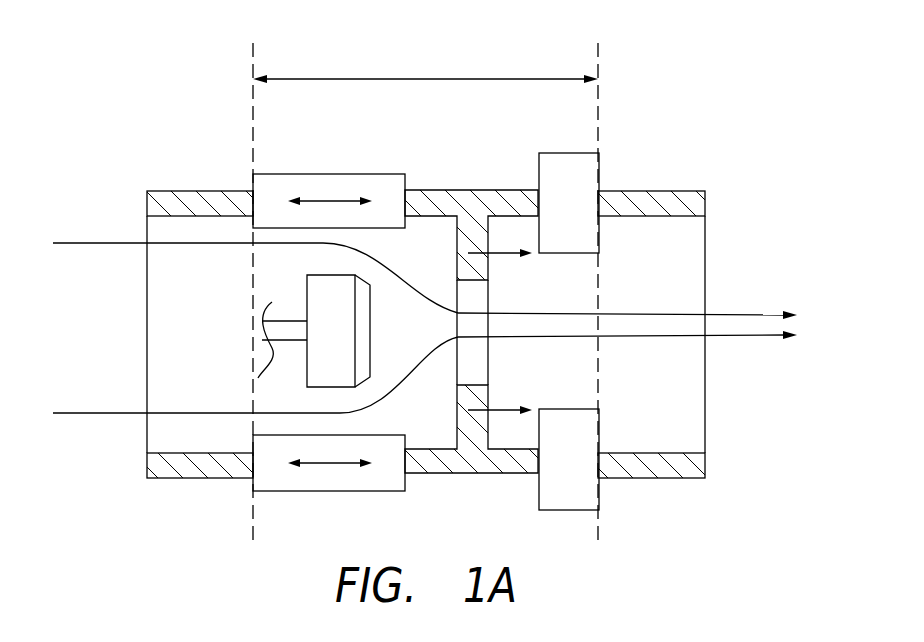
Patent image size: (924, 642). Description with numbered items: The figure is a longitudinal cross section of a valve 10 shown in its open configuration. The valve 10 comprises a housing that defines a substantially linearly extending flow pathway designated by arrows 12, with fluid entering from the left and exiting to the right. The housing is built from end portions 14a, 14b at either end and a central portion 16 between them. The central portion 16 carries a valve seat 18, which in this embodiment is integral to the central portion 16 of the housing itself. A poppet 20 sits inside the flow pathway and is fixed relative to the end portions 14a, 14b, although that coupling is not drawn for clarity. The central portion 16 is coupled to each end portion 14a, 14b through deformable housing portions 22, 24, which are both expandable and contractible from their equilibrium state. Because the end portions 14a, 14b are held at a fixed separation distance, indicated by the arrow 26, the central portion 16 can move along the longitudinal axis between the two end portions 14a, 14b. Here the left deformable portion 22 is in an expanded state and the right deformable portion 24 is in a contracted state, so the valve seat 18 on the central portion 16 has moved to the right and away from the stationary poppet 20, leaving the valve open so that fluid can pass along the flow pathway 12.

The valve 10 is at (707, 553).
The flow pathway 12 is at (725, 335).
The end portion 14a is at (190, 182).
The end portion 14b is at (663, 182).
The central portion 16 is at (479, 182).
The valve seat 18 is at (458, 253).
The poppet 20 is at (319, 345).
The deformable housing portion 22 is at (343, 174).
The deformable housing portion 24 is at (583, 153).
The arrow 26 is at (412, 79).